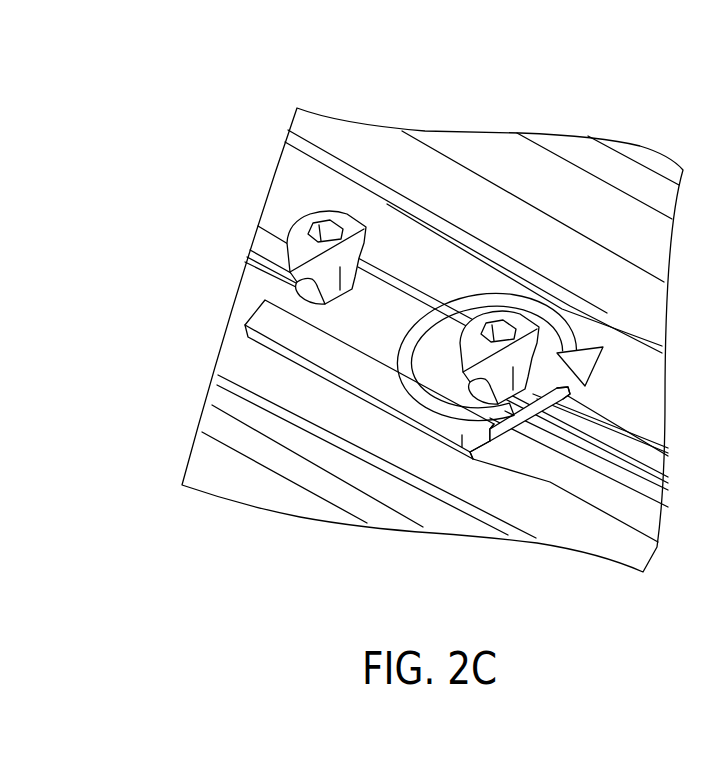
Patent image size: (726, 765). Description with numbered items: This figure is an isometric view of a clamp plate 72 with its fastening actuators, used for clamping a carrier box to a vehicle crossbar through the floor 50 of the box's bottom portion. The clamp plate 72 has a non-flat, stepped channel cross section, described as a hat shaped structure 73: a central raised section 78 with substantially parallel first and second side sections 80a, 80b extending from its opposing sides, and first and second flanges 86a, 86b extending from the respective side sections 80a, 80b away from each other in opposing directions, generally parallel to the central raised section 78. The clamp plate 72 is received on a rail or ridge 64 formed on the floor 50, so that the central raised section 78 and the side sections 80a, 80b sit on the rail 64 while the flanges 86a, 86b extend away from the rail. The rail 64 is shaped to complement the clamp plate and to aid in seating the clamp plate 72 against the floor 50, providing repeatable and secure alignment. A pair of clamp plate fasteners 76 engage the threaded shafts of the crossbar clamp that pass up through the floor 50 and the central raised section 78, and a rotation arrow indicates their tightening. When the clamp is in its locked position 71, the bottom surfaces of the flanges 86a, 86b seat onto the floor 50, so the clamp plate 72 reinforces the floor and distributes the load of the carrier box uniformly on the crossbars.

The floor 50 is at (638, 557).
The rail 64 is at (640, 462).
The locked position 71 is at (207, 232).
The clamp plate 72 is at (373, 290).
The hat shaped structure 73 is at (155, 453).
The clamp plate fastener 76 is at (347, 222).
The central raised section 78 is at (333, 318).
The first side section 80a is at (512, 435).
The second side section 80b is at (567, 401).
The first flange 86a is at (462, 447).
The second flange 86b is at (568, 392).